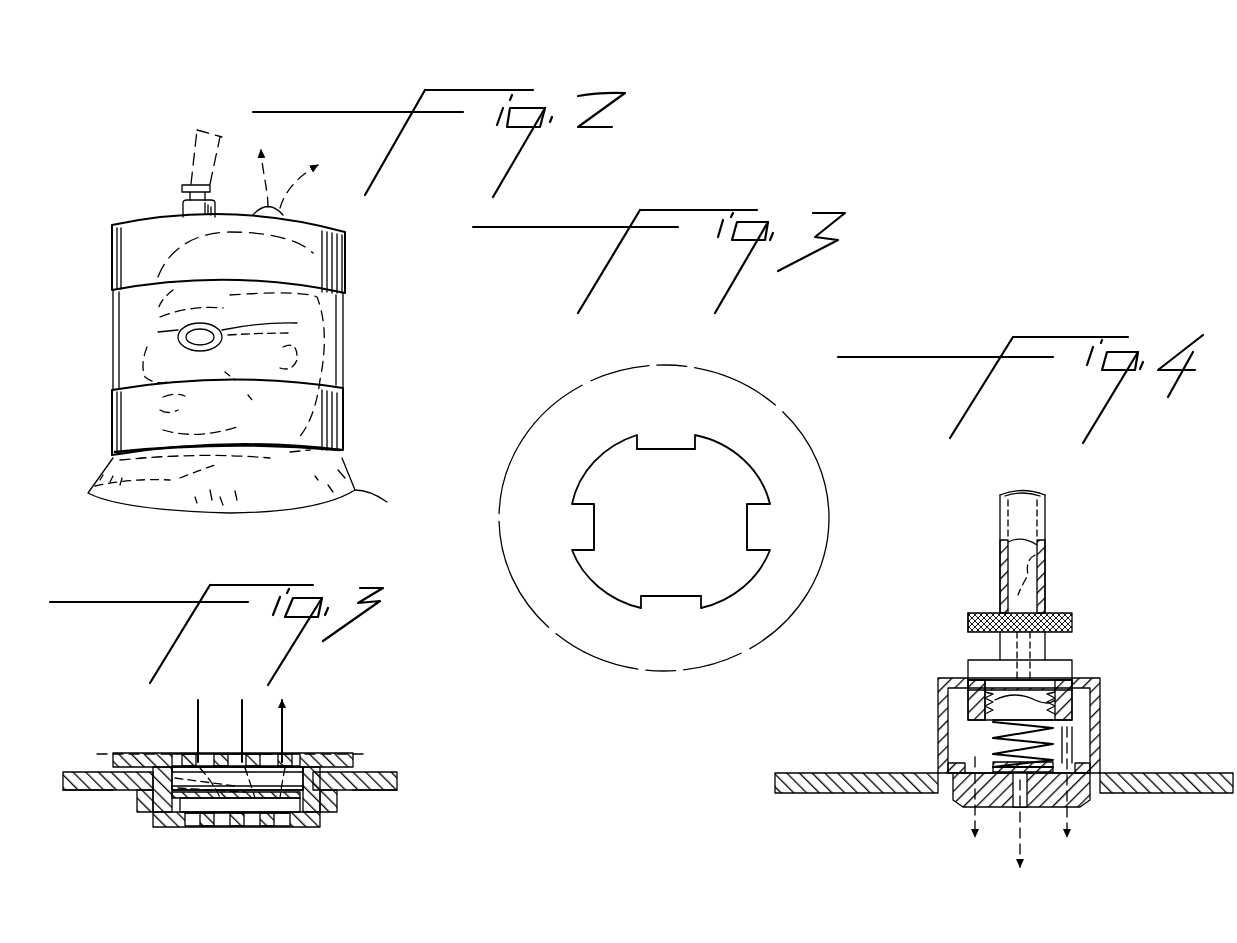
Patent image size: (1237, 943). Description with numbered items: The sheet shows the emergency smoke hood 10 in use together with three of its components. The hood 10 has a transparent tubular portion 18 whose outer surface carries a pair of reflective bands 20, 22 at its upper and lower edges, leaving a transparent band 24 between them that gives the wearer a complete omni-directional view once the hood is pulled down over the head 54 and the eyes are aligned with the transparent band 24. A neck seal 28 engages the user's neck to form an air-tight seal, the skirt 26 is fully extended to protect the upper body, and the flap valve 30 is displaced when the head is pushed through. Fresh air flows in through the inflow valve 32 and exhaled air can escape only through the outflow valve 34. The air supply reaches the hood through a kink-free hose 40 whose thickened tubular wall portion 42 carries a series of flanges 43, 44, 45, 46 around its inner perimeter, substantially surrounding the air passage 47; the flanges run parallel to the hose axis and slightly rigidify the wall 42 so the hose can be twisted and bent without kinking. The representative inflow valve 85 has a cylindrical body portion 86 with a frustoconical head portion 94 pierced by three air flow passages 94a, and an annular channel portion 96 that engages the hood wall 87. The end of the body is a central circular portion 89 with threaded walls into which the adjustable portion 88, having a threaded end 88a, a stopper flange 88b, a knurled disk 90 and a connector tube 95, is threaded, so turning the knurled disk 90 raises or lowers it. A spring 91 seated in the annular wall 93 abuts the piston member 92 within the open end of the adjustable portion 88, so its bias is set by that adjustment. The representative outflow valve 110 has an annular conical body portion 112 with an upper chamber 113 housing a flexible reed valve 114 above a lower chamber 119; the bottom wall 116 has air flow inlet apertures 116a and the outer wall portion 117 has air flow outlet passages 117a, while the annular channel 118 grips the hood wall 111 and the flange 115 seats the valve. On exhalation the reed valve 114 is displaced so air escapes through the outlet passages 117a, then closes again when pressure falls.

In FIG. 2, the hood 10 is at (230, 301).
In FIG. 2, the tubular portion 18 is at (342, 318).
In FIG. 2, the reflective band 20 is at (340, 268).
In FIG. 2, the reflective band 22 is at (320, 425).
In FIG. 2, the transparent band 24 is at (320, 353).
In FIG. 2, the skirt 26 is at (130, 485).
In FIG. 2, the neck seal 28 is at (145, 455).
In FIG. 2, the flap valve 30 is at (190, 150).
In FIG. 2, the inflow valve 32 is at (185, 205).
In FIG. 2, the outflow valve 34 is at (283, 207).
In FIG. 2, the head 54 is at (160, 305).
In FIG. 3, the kink-free hose 40 is at (684, 531).
In FIG. 3, the tubular wall portion 42 is at (785, 598).
In FIG. 3, the flange 43 is at (675, 605).
In FIG. 3, the flange 44 is at (580, 525).
In FIG. 3, the flange 45 is at (660, 437).
In FIG. 3, the flange 46 is at (763, 531).
In FIG. 3, the air passage 47 is at (660, 523).
In FIG. 4, the inflow valve 85 is at (1004, 683).
In FIG. 4, the body portion 86 is at (1057, 752).
In FIG. 4, the hood wall 87 is at (1185, 780).
In FIG. 4, the adjustable portion 88 is at (1025, 645).
In FIG. 4, the threaded end 88a is at (1045, 685).
In FIG. 4, the stopper flange 88b is at (990, 660).
In FIG. 4, the central circular portion 89 is at (985, 700).
In FIG. 4, the knurled disk 90 is at (975, 605).
In FIG. 4, the spring 91 is at (990, 760).
In FIG. 4, the piston member 92 is at (1000, 735).
In FIG. 4, the annular wall 93 is at (968, 810).
In FIG. 4, the head portion 94 is at (1040, 800).
In FIG. 4, the air flow passages 94a is at (1010, 815).
In FIG. 4, the connector tube 95 is at (1048, 572).
In FIG. 4, the annular channel portion 96 is at (1085, 785).
In FIG. 5, the outflow valve 110 is at (265, 765).
In FIG. 5, the hood wall 111 is at (368, 760).
In FIG. 5, the body portion 112 is at (118, 753).
In FIG. 5, the upper chamber 113 is at (300, 765).
In FIG. 5, the reed valve 114 is at (155, 760).
In FIG. 5, the lower flange 115 is at (312, 815).
In FIG. 5, the wall 116 is at (215, 828).
In FIG. 5, the air flow inlet apertures 116a is at (290, 828).
In FIG. 5, the outer wall portion 117 is at (233, 762).
In FIG. 5, the air flow outlet passages 117a is at (225, 755).
In FIG. 5, the annular channel 118 is at (125, 790).
In FIG. 5, the lower chamber 119 is at (228, 805).